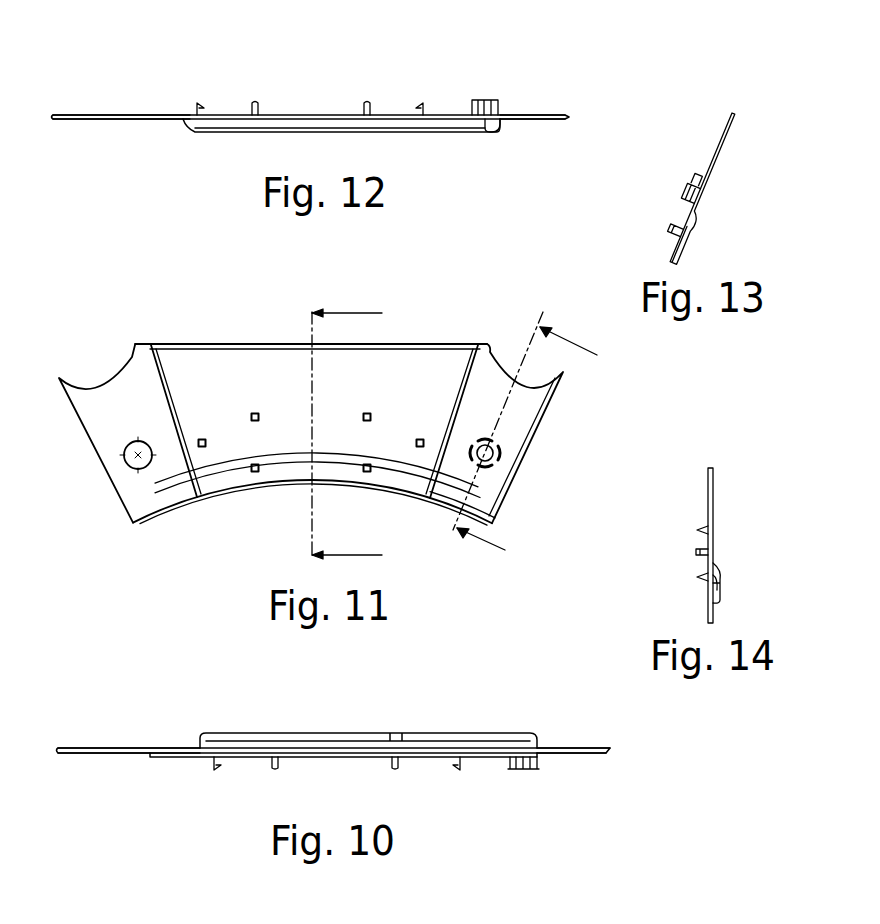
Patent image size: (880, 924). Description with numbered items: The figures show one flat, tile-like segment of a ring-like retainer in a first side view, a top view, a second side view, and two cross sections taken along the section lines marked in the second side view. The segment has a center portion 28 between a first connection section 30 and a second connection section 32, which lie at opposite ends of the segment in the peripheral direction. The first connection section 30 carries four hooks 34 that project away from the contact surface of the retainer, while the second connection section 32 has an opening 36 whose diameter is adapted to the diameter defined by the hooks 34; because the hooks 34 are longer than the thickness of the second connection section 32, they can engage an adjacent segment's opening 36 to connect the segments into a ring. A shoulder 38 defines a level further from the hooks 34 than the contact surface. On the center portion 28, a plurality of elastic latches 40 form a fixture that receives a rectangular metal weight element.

In FIG. 12, the center portion 28 is at (305, 114).
In FIG. 13, the center portion 28 is at (698, 186).
In FIG. 11, the center portion 28 is at (375, 431).
In FIG. 14, the center portion 28 is at (708, 545).
In FIG. 10, the center portion 28 is at (334, 752).
In FIG. 12, the first connection section 30 is at (545, 116).
In FIG. 11, the first connection section 30 is at (518, 423).
In FIG. 10, the first connection section 30 is at (565, 738).
In FIG. 12, the second connection section 32 is at (98, 122).
In FIG. 11, the second connection section 32 is at (158, 502).
In FIG. 10, the second connection section 32 is at (105, 752).
In FIG. 12, the hooks 34 is at (490, 100).
In FIG. 13, the hooks 34 is at (693, 187).
In FIG. 11, the hooks 34 is at (486, 440).
In FIG. 14, the hooks 34 is at (716, 583).
In FIG. 10, the hooks 34 is at (535, 766).
In FIG. 11, the opening 36 is at (125, 462).
In FIG. 12, the shoulder 38 is at (245, 133).
In FIG. 10, the shoulder 38 is at (462, 732).
In FIG. 12, the elastic latches 40 is at (262, 100).
In FIG. 13, the elastic latches 40 is at (676, 230).
In FIG. 14, the elastic latches 40 is at (702, 553).
In FIG. 10, the elastic latches 40 is at (458, 768).